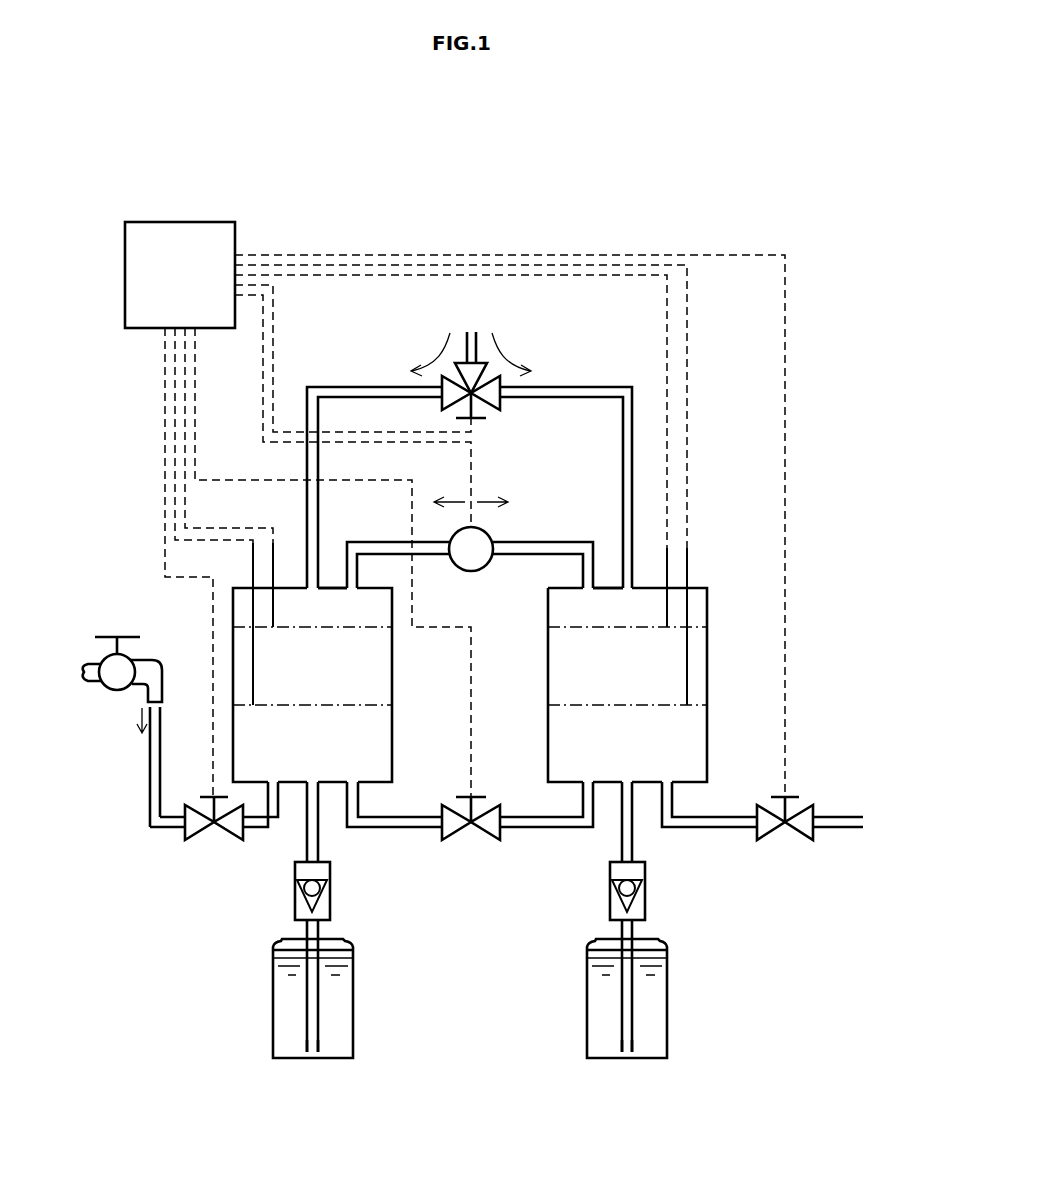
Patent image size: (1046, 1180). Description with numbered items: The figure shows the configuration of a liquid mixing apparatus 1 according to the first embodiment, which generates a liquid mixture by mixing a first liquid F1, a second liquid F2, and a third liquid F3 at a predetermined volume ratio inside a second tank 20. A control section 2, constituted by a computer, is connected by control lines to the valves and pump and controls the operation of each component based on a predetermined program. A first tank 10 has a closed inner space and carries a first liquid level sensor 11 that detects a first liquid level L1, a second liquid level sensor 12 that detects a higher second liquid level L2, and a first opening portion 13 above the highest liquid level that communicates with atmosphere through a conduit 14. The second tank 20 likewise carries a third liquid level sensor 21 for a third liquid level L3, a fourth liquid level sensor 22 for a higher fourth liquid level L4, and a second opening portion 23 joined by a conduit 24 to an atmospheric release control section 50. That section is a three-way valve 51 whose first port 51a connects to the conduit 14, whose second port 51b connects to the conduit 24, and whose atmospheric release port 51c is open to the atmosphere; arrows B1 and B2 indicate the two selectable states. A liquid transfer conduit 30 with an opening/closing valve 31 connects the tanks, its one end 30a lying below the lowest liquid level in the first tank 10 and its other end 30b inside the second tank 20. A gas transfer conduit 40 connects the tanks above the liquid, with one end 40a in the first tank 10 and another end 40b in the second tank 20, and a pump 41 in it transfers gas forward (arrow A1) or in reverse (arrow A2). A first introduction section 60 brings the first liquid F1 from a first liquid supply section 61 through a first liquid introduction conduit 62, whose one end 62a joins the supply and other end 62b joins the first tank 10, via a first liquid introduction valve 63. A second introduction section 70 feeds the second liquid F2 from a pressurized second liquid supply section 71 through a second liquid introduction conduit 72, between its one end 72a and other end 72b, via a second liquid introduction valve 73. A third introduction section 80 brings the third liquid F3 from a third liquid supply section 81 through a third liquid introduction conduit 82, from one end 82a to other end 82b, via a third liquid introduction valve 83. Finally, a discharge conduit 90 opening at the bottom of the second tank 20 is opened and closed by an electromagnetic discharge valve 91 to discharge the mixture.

The liquid mixing apparatus 1 is at (437, 203).
The control section 2 is at (181, 222).
The first tank 10 is at (233, 600).
The first liquid level sensor 11 is at (253, 656).
The second liquid level sensor 12 is at (273, 563).
The first opening portion 13 is at (312, 588).
The conduit 14 is at (318, 387).
The second tank 20 is at (707, 690).
The third liquid level sensor 21 is at (687, 640).
The fourth liquid level sensor 22 is at (667, 598).
The second opening portion 23 is at (628, 588).
The conduit 24 is at (630, 387).
The liquid transfer conduit 30 is at (472, 801).
The one end of liquid transfer conduit 30a is at (352, 790).
The other end of liquid transfer conduit 30b is at (588, 790).
The opening/closing valve 31 is at (465, 832).
The gas transfer conduit 40 is at (476, 559).
The one end of gas transfer conduit 40a is at (340, 590).
The other end of gas transfer conduit 40b is at (604, 590).
The pump 41 is at (466, 572).
The atmospheric release control section 50 is at (475, 322).
The three-way valve 51 is at (475, 360).
The first port 51a is at (440, 394).
The second port 51b is at (504, 394).
The atmospheric release port 51c is at (520, 312).
The first introduction section 60 is at (294, 911).
The first liquid supply section 61 is at (336, 998).
The first liquid introduction conduit 62 is at (305, 930).
The one end of first liquid introduction conduit 62a is at (315, 1050).
The other end of first liquid introduction conduit 62b is at (313, 780).
The first liquid introduction valve 63 is at (295, 893).
The second introduction section 70 is at (180, 769).
The second liquid supply section 71 is at (108, 688).
The second liquid introduction conduit 72 is at (189, 767).
The one end of second liquid introduction conduit 72a is at (161, 712).
The other end of second liquid introduction conduit 72b is at (272, 780).
The second liquid introduction valve 73 is at (206, 834).
The third introduction section 80 is at (649, 911).
The third liquid supply section 81 is at (602, 998).
The third liquid introduction conduit 82 is at (632, 930).
The one end of third liquid introduction conduit 82a is at (630, 1050).
The other end of third liquid introduction conduit 82b is at (630, 780).
The third liquid introduction valve 83 is at (645, 884).
The discharge conduit 90 is at (730, 804).
The discharge valve 91 is at (784, 834).
The arrow A1 is at (494, 490).
The arrow A2 is at (451, 490).
The arrow B1 is at (430, 354).
The arrow B2 is at (511, 354).
The first liquid F1 is at (292, 995).
The second liquid F2 is at (131, 720).
The third liquid F3 is at (652, 995).
The first liquid level L1 is at (376, 705).
The second liquid level L2 is at (376, 627).
The third liquid level L3 is at (564, 705).
The fourth liquid level L4 is at (564, 627).